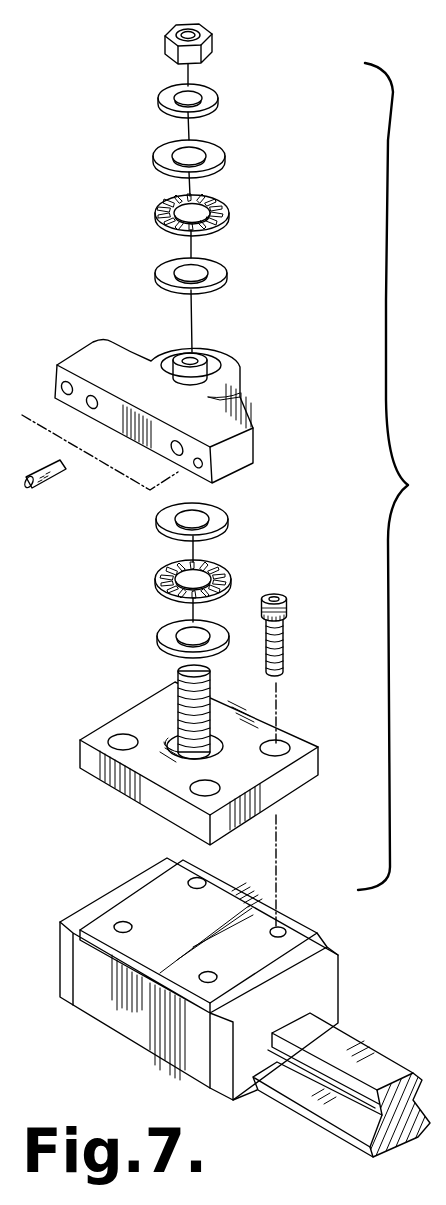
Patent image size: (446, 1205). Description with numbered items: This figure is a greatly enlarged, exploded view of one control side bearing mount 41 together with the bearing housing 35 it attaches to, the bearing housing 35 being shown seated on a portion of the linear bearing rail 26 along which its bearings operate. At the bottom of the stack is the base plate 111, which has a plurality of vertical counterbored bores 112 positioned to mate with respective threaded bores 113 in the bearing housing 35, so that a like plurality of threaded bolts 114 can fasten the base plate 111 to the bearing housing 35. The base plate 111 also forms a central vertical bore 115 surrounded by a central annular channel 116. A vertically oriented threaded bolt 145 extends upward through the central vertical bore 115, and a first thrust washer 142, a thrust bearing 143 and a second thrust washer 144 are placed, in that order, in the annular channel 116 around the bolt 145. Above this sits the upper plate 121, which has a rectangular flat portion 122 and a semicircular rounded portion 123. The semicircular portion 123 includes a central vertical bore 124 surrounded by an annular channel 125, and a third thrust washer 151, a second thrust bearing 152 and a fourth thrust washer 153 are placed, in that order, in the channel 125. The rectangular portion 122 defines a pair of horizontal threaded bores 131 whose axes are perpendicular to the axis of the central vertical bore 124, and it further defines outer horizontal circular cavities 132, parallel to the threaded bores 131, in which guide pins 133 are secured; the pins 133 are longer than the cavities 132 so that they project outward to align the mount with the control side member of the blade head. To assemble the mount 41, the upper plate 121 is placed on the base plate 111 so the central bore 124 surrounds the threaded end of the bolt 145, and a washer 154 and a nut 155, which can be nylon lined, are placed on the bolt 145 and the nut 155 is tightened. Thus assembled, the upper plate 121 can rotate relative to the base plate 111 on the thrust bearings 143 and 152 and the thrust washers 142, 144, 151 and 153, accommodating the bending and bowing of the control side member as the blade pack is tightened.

The nut 155 is at (212, 44).
The washer 154 is at (216, 96).
The fourth thrust washer 153 is at (227, 158).
The second thrust bearing 152 is at (229, 212).
The third thrust washer 151 is at (230, 269).
The semicircular rounded portion 123 is at (238, 368).
The central vertical bore 124 is at (163, 366).
The annular channel 125 is at (213, 378).
The upper plate 121 is at (165, 423).
The rectangular flat portion 122 is at (143, 440).
The outer horizontal circular cavities 132 is at (64, 389).
The horizontal threaded bores 131 is at (91, 406).
The guide pins 133 is at (52, 482).
The control side bearing mount 41 is at (318, 484).
The second thrust washer 144 is at (160, 514).
The thrust bearing 143 is at (232, 577).
The first thrust washer 142 is at (159, 636).
The threaded bolts 114 is at (288, 638).
The threaded bolt 145 is at (205, 711).
The central vertical bore 115 is at (180, 738).
The central annular channel 116 is at (170, 740).
The counterbored bores 112 is at (278, 745).
The base plate 111 is at (217, 751).
The threaded bores 113 is at (283, 931).
The bearing housing 35 is at (199, 979).
The linear bearing rail 26 is at (387, 1063).